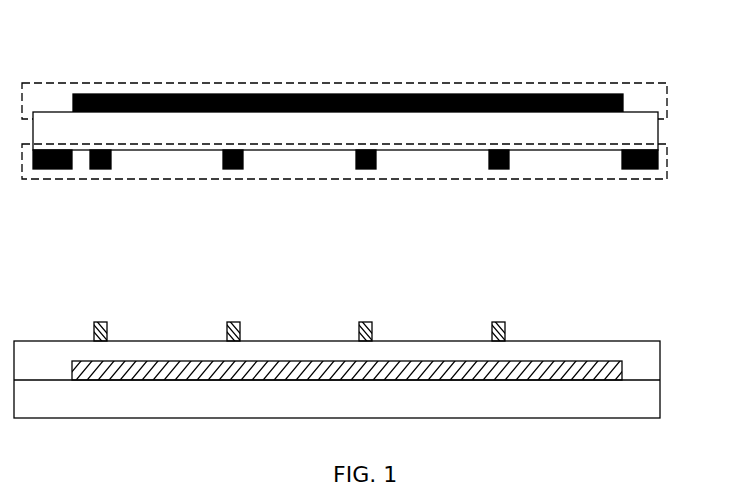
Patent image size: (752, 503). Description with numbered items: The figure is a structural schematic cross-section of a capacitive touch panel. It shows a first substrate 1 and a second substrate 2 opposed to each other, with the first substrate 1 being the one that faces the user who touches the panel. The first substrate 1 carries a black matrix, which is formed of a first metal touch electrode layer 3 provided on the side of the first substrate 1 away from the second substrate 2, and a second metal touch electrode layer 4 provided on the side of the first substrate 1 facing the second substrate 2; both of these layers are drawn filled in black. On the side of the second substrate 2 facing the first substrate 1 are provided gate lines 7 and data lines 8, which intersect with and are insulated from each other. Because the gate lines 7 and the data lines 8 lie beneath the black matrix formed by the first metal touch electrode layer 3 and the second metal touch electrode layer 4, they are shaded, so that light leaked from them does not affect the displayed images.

The first substrate 1 is at (373, 149).
The second substrate 2 is at (362, 379).
The first metal touch electrode layer 3 is at (344, 73).
The second metal touch electrode layer 4 is at (344, 191).
The gate lines 7 is at (354, 349).
The data lines 8 is at (315, 310).